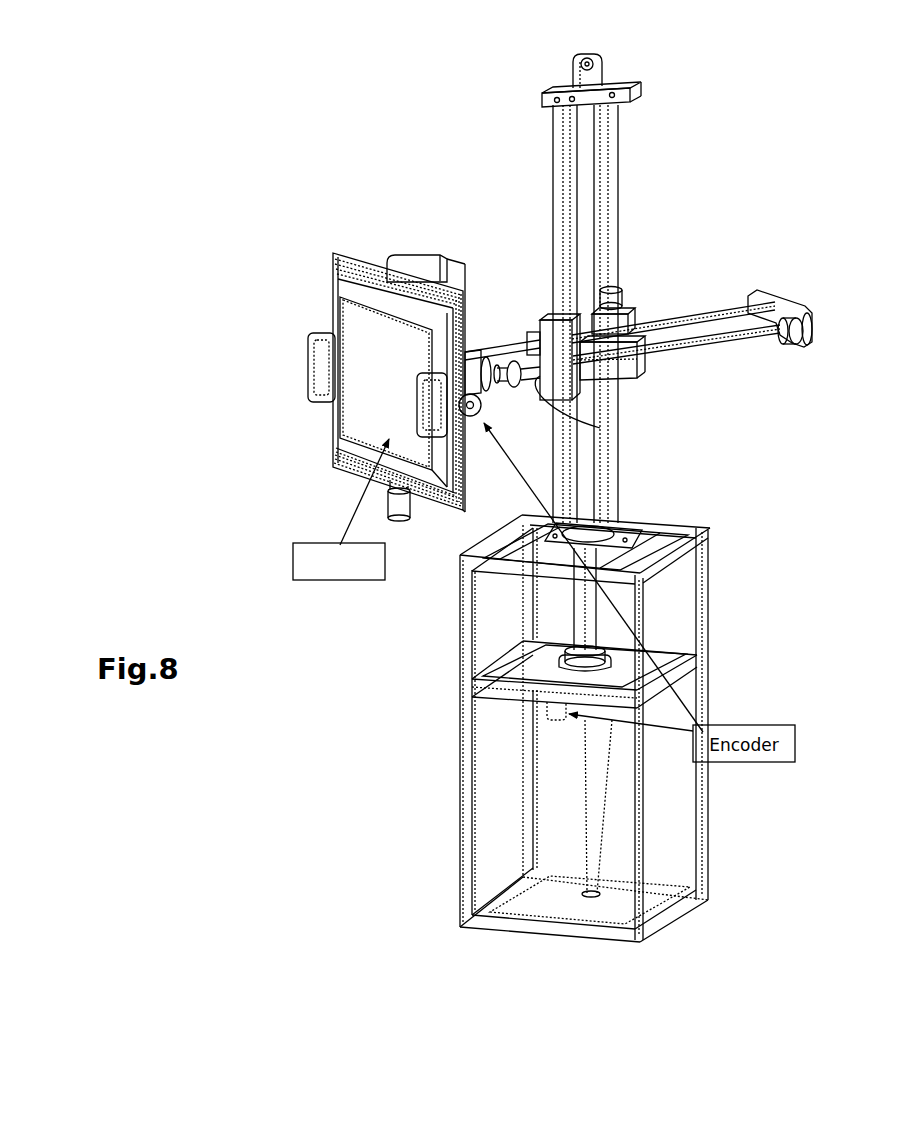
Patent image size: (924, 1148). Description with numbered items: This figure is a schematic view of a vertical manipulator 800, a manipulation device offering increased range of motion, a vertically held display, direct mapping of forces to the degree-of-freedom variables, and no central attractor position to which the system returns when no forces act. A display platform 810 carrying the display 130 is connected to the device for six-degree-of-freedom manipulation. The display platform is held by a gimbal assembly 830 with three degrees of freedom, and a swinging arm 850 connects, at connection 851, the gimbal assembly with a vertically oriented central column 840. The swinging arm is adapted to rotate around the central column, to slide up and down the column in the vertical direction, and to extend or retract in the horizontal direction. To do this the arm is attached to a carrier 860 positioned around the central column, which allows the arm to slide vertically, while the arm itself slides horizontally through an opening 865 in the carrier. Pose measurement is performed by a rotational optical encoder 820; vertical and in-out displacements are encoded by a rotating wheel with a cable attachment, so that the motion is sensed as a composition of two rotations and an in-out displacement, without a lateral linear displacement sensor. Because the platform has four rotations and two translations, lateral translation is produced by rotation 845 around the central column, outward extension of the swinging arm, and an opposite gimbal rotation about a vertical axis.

The vertical manipulator 800 is at (166, 748).
The display platform 810 is at (335, 455).
The display 130 is at (293, 550).
The rotational optical encoder 820 is at (765, 725).
The gimbal assembly 830 is at (412, 258).
The central column 840 is at (585, 137).
The rotation around the central column 845 is at (563, 657).
The swinging arm 850 is at (752, 348).
The connection of swinging arm to gimbal assembly 851 is at (473, 352).
The carrier 860 is at (603, 362).
The opening 865 is at (600, 428).